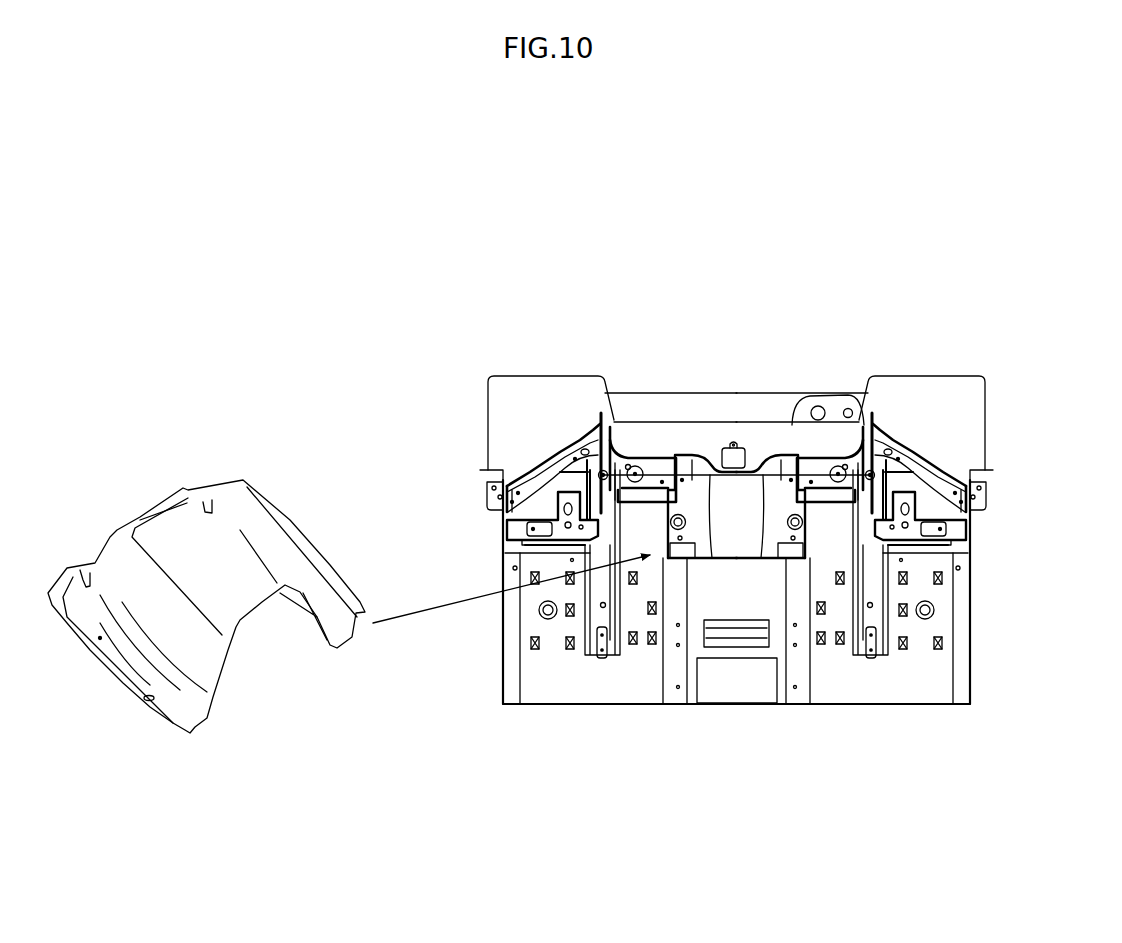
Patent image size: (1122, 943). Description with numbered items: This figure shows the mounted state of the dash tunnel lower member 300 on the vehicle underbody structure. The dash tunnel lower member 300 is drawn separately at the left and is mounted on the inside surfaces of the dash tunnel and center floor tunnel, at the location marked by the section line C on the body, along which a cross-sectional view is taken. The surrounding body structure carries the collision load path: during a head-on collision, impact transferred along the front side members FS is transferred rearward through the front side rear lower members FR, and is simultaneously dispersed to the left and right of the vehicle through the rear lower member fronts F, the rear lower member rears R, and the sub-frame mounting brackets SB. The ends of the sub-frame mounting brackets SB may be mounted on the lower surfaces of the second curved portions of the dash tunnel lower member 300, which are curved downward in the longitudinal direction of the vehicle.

The dash tunnel lower member 300 is at (225, 567).
The front side member FS is at (870, 386).
The sub-frame mounting bracket SB is at (830, 455).
The line C- C is at (650, 481).
The rear lower member front F is at (953, 500).
The rear lower member rear R is at (905, 525).
The front side rear lower member FR is at (868, 617).